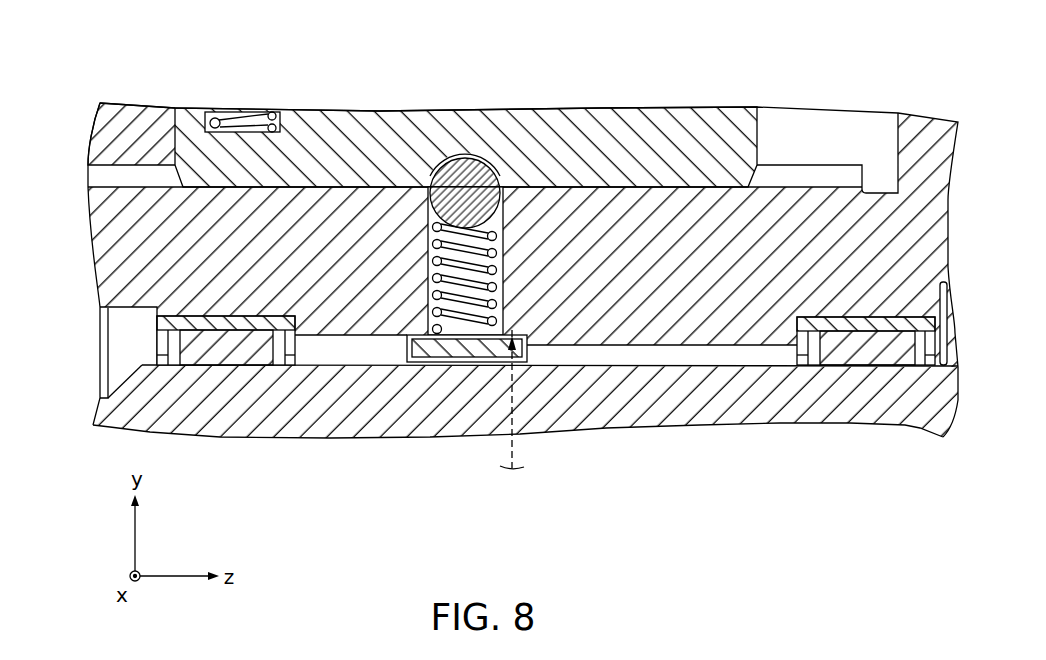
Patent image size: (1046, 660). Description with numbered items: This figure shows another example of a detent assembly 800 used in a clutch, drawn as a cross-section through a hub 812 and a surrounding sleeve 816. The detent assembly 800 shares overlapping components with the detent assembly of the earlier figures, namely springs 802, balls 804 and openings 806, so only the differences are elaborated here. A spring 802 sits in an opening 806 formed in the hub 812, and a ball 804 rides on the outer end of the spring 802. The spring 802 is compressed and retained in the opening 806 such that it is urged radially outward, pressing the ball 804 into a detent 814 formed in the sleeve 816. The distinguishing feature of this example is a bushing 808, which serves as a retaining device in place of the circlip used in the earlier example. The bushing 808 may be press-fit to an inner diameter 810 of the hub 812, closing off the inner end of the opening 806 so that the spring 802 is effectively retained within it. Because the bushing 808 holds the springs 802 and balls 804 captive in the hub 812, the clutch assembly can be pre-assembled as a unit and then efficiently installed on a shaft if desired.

The detent assembly 800 is at (303, 193).
The spring 802 is at (430, 279).
The ball 804 is at (455, 192).
The opening 806 is at (495, 278).
The bushing 808 is at (427, 345).
The inner diameter 810 is at (520, 446).
The hub 812 is at (685, 283).
The detent 814 is at (482, 160).
The sleeve 816 is at (613, 167).